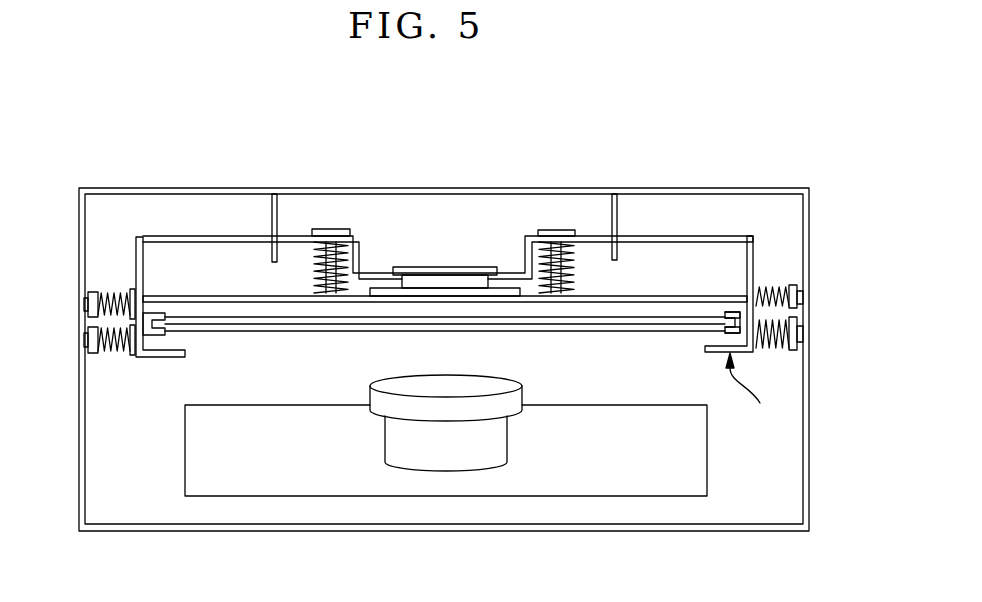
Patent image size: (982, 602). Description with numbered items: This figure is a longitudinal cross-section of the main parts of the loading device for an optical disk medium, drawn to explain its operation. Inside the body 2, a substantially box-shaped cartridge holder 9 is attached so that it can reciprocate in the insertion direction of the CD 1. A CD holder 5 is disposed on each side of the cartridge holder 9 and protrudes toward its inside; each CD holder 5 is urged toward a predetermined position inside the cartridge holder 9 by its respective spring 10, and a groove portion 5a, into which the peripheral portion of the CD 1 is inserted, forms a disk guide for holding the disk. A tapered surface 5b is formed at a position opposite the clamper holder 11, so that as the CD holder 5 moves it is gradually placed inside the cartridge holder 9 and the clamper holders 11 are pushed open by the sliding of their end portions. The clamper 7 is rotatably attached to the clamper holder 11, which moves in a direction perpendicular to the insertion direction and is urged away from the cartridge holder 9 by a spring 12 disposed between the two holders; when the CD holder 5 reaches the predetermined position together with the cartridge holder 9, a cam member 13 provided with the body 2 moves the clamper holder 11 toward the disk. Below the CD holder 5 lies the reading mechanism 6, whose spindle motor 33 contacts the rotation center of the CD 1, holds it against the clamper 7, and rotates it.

The CD 1 is at (356, 329).
The body 2 is at (810, 500).
The optical disk holder 5 is at (147, 339).
The groove portion 5a is at (735, 309).
The tapered surface 5b is at (750, 312).
The reading mechanism 6 is at (547, 487).
The clamper 7 is at (420, 268).
The cartridge holder 9 is at (752, 391).
The spring 10 is at (108, 291).
The clamper holder 11 is at (746, 235).
The spring 12 is at (317, 258).
The cam member 13 is at (270, 218).
The spindle motor 33 is at (447, 463).